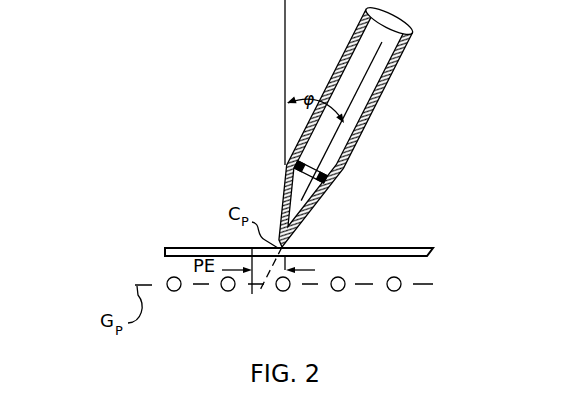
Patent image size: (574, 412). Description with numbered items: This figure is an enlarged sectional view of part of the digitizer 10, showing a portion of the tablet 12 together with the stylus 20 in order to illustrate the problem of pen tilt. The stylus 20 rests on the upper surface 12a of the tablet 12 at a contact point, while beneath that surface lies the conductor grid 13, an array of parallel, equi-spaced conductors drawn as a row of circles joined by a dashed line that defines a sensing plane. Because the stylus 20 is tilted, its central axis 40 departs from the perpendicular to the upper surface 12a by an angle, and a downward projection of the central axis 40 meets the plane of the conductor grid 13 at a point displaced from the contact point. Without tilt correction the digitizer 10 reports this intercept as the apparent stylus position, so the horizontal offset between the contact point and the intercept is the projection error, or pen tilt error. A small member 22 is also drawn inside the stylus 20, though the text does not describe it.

The digitizer 10 is at (222, 111).
The stylus 20 is at (388, 121).
The central axis 40 is at (376, 63).
The pressure sensing member 22 is at (345, 168).
The tablet 12 is at (426, 265).
The upper surface 12a is at (333, 248).
The conductor grid 13 is at (393, 277).